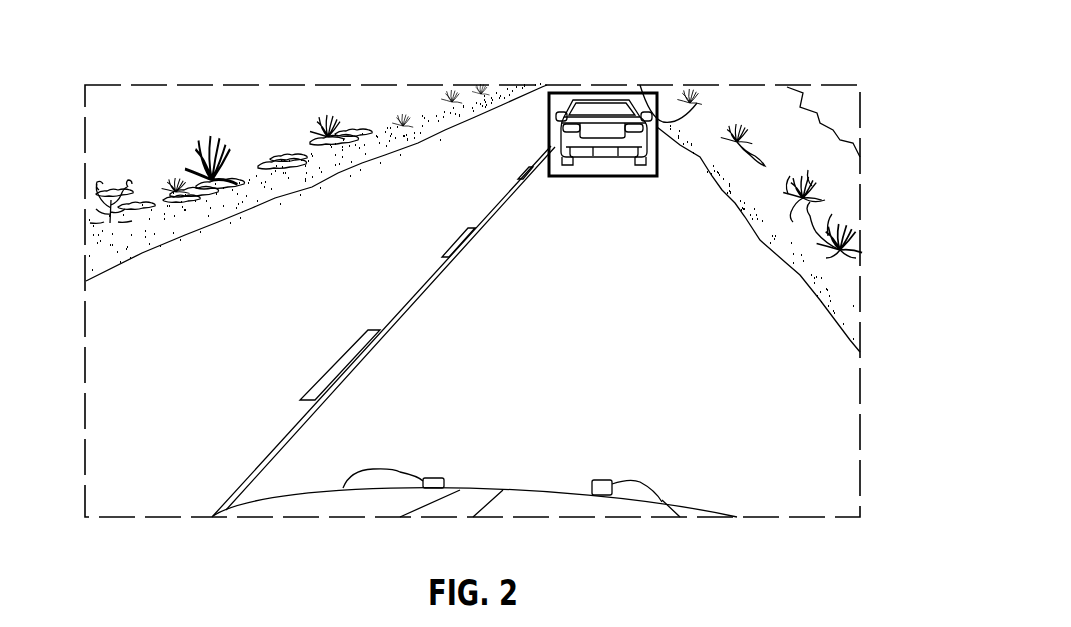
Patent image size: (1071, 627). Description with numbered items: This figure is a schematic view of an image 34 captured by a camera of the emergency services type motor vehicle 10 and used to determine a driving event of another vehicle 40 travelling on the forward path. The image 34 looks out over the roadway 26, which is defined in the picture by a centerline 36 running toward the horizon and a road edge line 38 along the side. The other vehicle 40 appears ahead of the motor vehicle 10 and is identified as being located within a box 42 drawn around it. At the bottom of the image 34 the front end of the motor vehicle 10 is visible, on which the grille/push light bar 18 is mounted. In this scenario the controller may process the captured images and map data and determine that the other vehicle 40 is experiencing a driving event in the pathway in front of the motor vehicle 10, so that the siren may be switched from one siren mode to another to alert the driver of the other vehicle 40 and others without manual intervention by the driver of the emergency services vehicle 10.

The motor vehicle 10 is at (384, 504).
The grille/push light bar 18 is at (343, 492).
The roadway 26 is at (733, 250).
The image 34 is at (764, 85).
The centerline 36 is at (502, 203).
The road edge line 38 is at (798, 272).
The other vehicle 40 is at (600, 128).
The box 42 is at (688, 100).